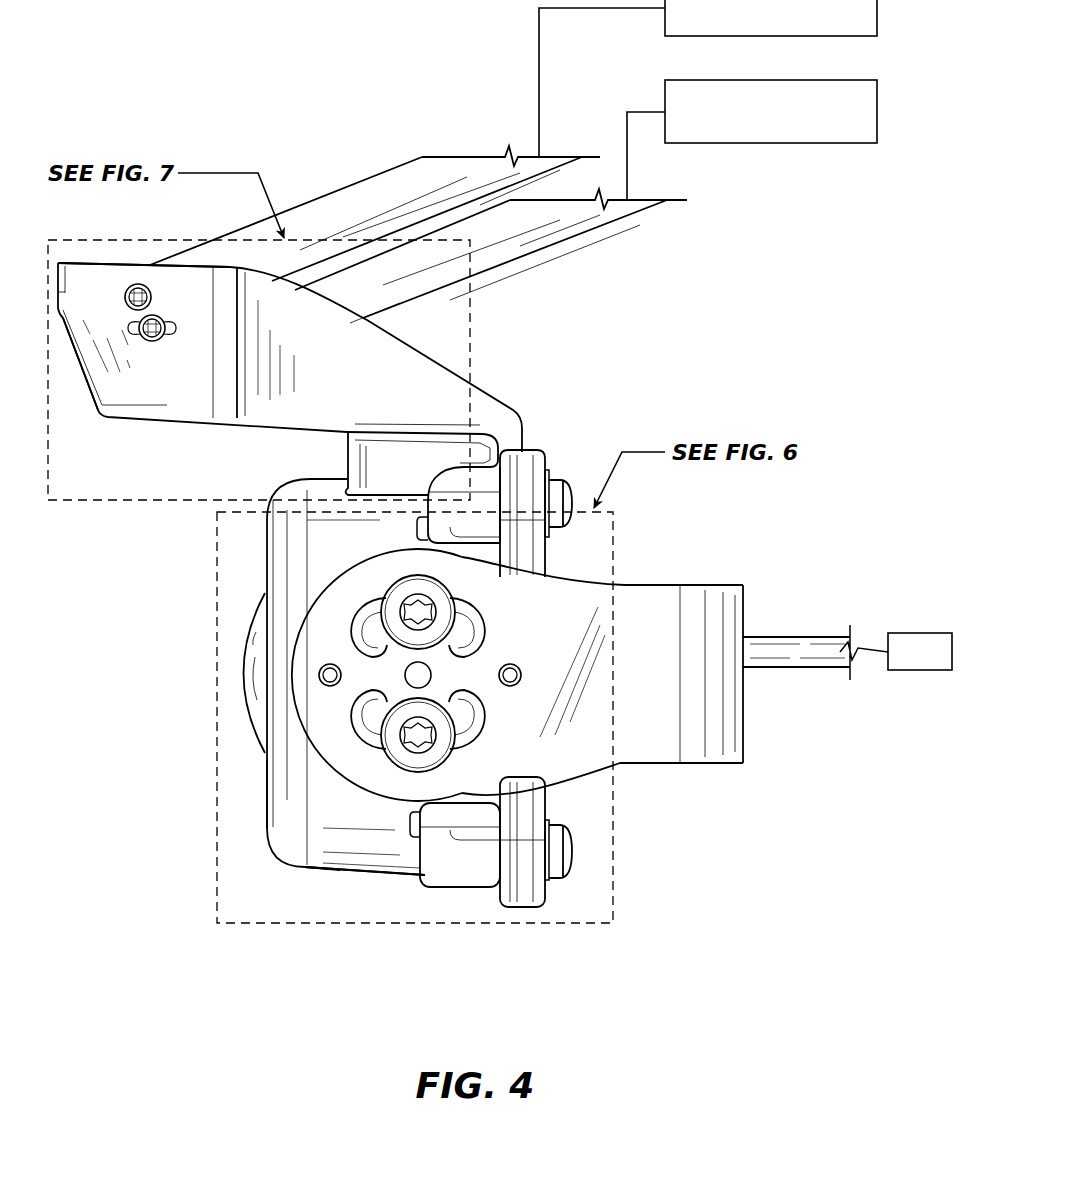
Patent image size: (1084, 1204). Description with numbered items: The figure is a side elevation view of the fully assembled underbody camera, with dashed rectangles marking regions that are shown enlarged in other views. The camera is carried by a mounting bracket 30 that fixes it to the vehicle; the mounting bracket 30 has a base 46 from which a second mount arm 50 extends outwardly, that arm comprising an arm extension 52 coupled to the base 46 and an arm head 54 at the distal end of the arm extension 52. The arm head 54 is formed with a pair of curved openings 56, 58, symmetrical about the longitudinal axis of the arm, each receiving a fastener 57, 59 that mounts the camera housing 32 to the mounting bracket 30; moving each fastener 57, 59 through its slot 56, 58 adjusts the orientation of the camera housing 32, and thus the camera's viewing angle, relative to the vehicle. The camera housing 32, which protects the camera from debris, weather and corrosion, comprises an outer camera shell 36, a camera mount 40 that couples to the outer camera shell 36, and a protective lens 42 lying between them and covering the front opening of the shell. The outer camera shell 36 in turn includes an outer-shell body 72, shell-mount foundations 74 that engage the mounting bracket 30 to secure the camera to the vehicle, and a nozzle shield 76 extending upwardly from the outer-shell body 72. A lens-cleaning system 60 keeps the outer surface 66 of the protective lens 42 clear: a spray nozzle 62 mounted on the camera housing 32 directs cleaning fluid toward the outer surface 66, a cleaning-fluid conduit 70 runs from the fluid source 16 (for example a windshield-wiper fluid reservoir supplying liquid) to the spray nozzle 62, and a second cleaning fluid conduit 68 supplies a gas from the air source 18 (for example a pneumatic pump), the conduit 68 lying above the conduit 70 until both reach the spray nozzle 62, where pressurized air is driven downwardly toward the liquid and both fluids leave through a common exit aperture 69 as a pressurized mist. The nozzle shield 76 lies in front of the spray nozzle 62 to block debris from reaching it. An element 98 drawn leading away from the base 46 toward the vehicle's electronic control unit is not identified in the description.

The fluid source 16 is at (877, 112).
The air source 18 is at (877, 8).
The mounting bracket 30 is at (513, 720).
The camera housing 32 is at (432, 892).
The outer camera shell 36 is at (347, 879).
The camera mount 40 is at (555, 893).
The protective lens 42 is at (243, 645).
The base 46 is at (745, 722).
The second mount arm 50 is at (690, 777).
The arm extension 52 is at (645, 752).
The arm head 54 is at (333, 785).
The curved opening 56 is at (362, 618).
The fastener 57 is at (390, 582).
The curved opening 58 is at (362, 730).
The fastener 59 is at (440, 770).
The lens-cleaning system 60 is at (368, 72).
The spray nozzle 62 is at (163, 280).
The outer surface 66 is at (247, 716).
The second cleaning fluid conduit 68 is at (318, 213).
The exit aperture 69 is at (160, 430).
The cleaning-fluid conduit 70 is at (583, 232).
The outer-shell body 72 is at (284, 478).
The shell-mount foundations 74 is at (353, 792).
The nozzle shield 76 is at (75, 380).
The sensor cable 98 is at (763, 628).